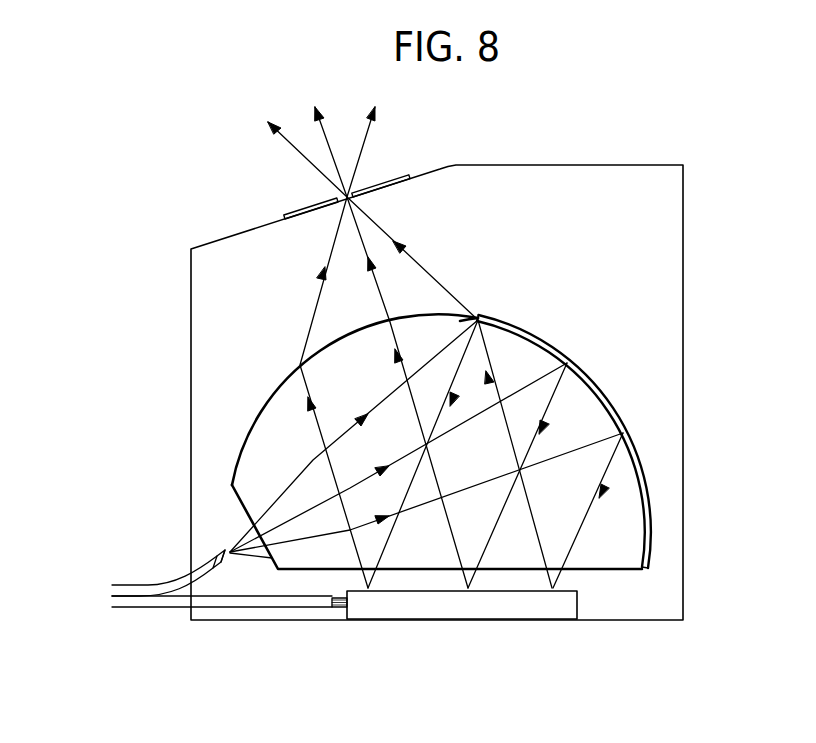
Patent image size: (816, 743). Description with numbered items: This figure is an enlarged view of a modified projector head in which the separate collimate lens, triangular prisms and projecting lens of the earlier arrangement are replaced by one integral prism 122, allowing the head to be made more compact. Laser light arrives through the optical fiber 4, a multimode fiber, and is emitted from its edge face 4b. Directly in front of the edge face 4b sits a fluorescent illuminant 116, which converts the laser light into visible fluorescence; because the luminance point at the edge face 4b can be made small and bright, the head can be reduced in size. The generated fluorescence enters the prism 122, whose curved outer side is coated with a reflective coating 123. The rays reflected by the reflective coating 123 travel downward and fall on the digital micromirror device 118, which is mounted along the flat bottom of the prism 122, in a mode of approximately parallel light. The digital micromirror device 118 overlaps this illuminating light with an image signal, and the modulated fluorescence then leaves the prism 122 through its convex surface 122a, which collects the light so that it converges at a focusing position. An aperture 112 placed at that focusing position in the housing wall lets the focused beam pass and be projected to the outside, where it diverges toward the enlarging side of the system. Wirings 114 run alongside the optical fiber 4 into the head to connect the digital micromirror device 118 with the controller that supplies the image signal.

The optical fiber 4 is at (138, 585).
The edge face of the optical fiber 4b is at (218, 548).
The aperture 112 is at (394, 180).
The wirings 114 is at (288, 603).
The fluorescent illuminant 116 is at (229, 549).
The digital micromirror device 118 is at (450, 603).
The integral prism 122 is at (277, 417).
The convex surface of the prism 122a is at (433, 317).
The reflective coating 123 is at (543, 341).